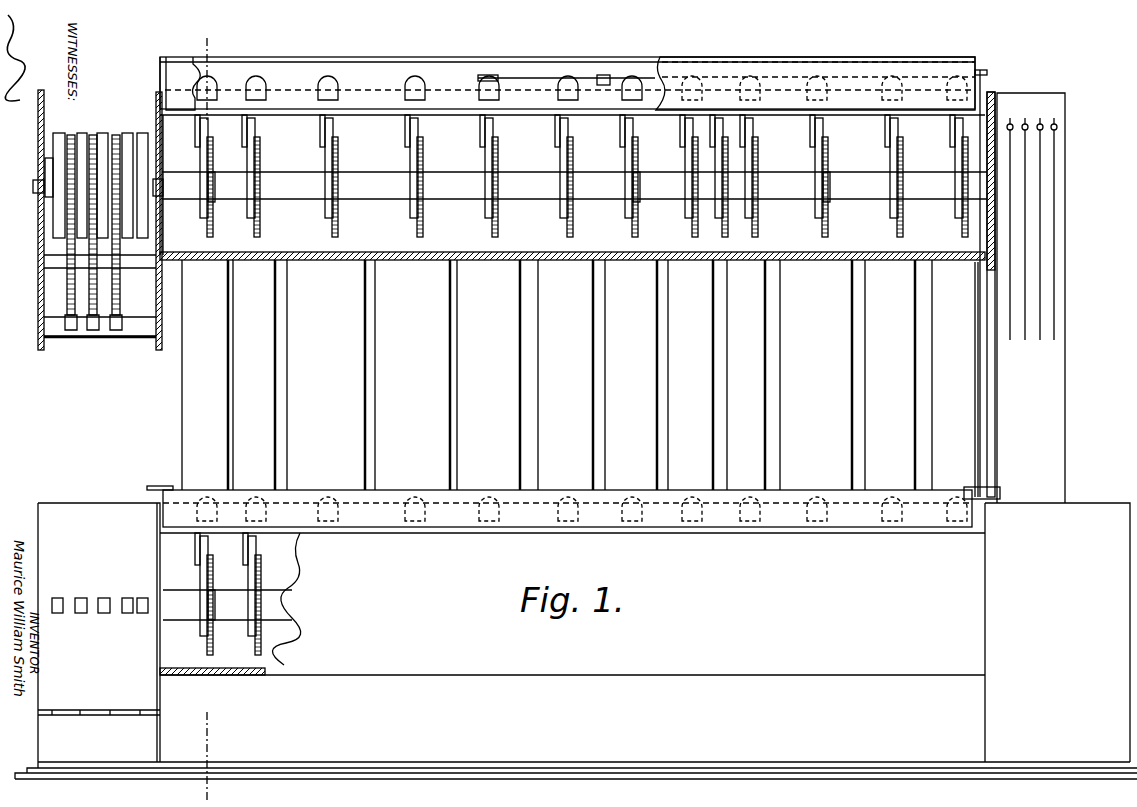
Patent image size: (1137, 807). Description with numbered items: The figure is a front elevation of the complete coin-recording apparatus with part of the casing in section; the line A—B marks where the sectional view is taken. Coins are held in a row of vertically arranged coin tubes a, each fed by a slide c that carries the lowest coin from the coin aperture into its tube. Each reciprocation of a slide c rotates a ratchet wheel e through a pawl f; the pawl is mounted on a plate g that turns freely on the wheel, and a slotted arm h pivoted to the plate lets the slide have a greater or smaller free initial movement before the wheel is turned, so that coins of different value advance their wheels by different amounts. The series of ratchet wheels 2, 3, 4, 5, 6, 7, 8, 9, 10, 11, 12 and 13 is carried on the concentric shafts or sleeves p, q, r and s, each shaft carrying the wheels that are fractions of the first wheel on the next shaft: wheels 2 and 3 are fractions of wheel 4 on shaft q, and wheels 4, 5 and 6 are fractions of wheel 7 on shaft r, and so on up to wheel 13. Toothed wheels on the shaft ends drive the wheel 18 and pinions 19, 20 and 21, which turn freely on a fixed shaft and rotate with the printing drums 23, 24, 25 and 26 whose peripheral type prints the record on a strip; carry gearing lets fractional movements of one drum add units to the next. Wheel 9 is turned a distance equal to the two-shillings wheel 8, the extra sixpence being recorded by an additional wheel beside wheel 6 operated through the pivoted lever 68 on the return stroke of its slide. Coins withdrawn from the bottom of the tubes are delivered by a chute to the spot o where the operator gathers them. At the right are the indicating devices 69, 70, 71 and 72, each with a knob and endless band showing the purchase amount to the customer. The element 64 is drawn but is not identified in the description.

The ratchet wheel 2 is at (960, 183).
The ratchet wheel 3 is at (895, 183).
The ratchet wheel 4 is at (820, 183).
The ratchet wheel 5 is at (751, 183).
The ratchet wheel 6 is at (693, 183).
The ratchet wheel 7 is at (636, 183).
The ratchet wheel 8 is at (569, 183).
The ratchet wheel 9 is at (494, 183).
The ratchet wheel 10 is at (423, 183).
The ratchet wheel 11 is at (337, 183).
The ratchet wheel 12 is at (260, 183).
The ratchet wheel 13 is at (212, 183).
The wheel 18 is at (45, 162).
The pinion 19 is at (73, 142).
The pinion 20 is at (103, 175).
The pinion 21 is at (118, 142).
The printing drum 23 is at (58, 140).
The printing drum 24 is at (80, 190).
The printing drum 25 is at (105, 193).
The printing drum 26 is at (130, 215).
The cover plate 64 is at (748, 88).
The pivoted lever 68 is at (545, 77).
The indicating device 69 is at (1010, 118).
The indicating device 70 is at (1025, 118).
The indicating device 71 is at (1040, 160).
The indicating device 72 is at (1054, 190).
The section line A is at (201, 71).
The section line B is at (215, 759).
The coin tube a is at (570, 375).
The slide c is at (213, 92).
The ratchet wheel e is at (206, 168).
The pawl f is at (486, 137).
The plate g is at (325, 162).
The slotted arm h is at (488, 132).
The shaft p is at (927, 187).
The shaft q is at (770, 196).
The shaft r is at (536, 198).
The shaft s is at (570, 393).
The discharge spot o is at (576, 641).